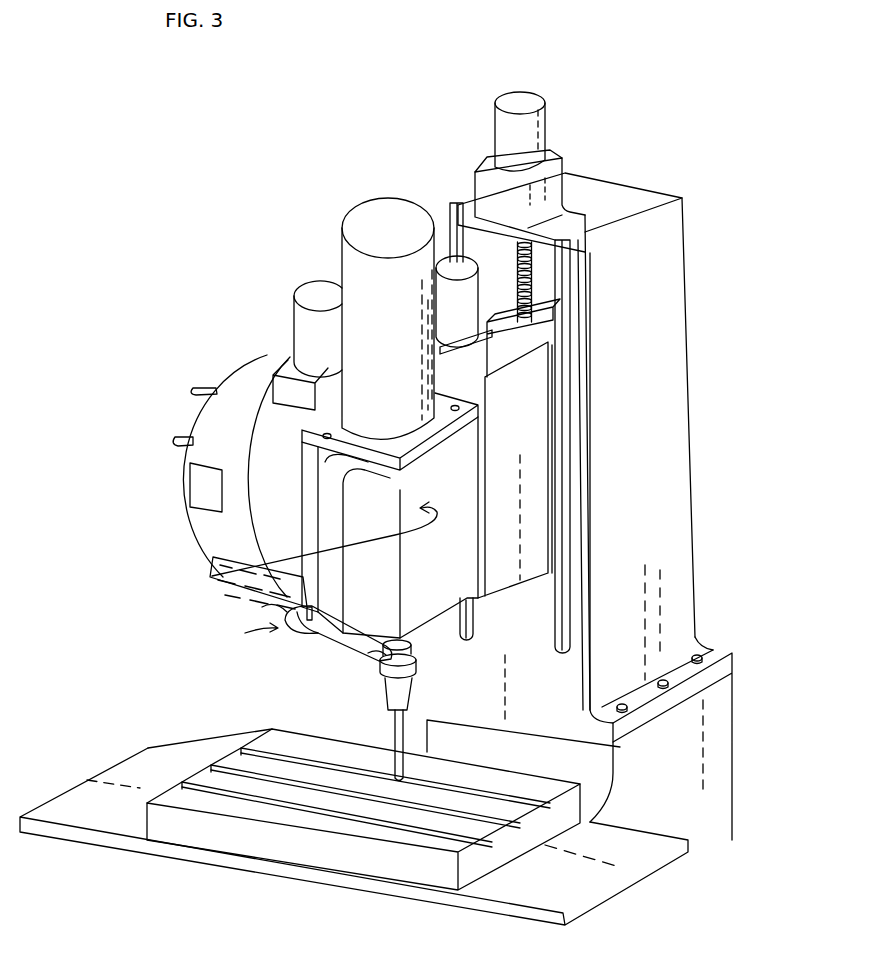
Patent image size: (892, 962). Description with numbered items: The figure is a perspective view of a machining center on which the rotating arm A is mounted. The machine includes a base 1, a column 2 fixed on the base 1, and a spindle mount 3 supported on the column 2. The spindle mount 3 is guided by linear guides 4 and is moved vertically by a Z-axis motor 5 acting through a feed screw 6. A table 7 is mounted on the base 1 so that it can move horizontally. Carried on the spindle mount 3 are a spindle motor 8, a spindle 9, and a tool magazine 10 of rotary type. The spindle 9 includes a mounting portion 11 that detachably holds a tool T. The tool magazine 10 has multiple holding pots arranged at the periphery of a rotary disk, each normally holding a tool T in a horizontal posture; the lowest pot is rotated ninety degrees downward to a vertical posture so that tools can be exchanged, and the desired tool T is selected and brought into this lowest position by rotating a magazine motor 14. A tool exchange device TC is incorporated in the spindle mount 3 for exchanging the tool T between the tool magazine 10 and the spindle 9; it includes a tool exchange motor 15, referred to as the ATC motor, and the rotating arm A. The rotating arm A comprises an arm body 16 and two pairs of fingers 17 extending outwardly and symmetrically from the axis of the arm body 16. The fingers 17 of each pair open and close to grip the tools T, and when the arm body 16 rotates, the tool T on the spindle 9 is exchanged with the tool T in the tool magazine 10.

The base 1 is at (718, 759).
The column 2 is at (580, 185).
The spindle mount 3 is at (540, 493).
The linear guides 4 is at (462, 210).
The Z-axis motor 5 is at (523, 98).
The feed screw 6 is at (533, 258).
The table 7 is at (177, 800).
The spindle motor 8 is at (360, 262).
The spindle 9 is at (412, 641).
The tool magazine 10 is at (207, 522).
The mounting portion 11 is at (413, 654).
The magazine motor 14 is at (317, 332).
The tool exchange motor 15 is at (457, 300).
The arm body 16 is at (315, 640).
The fingers 17 is at (260, 607).
The rotating arm A is at (238, 658).
The tool T is at (383, 700).
The tool exchange device TC is at (212, 575).